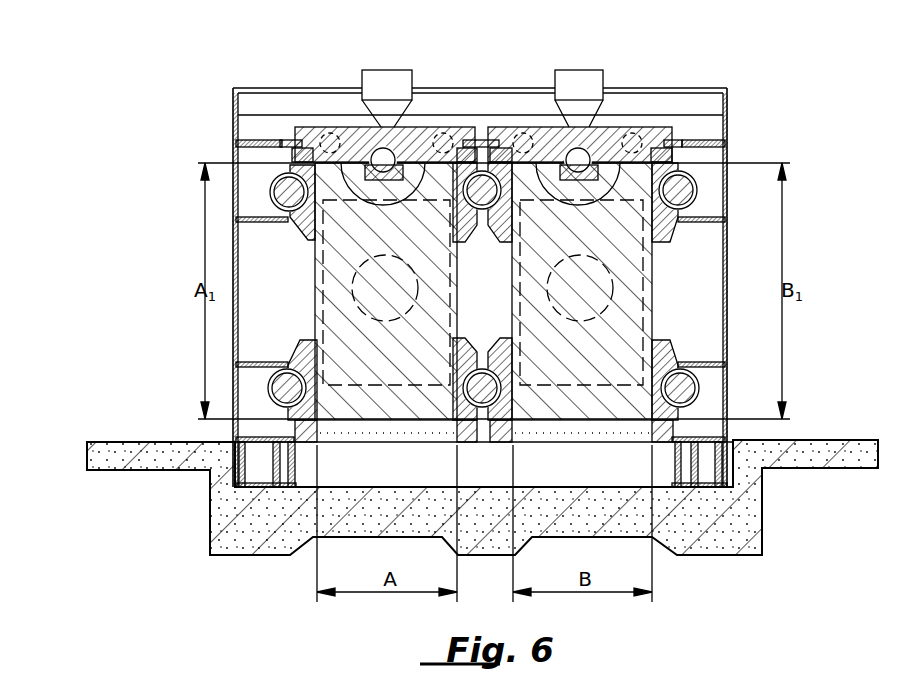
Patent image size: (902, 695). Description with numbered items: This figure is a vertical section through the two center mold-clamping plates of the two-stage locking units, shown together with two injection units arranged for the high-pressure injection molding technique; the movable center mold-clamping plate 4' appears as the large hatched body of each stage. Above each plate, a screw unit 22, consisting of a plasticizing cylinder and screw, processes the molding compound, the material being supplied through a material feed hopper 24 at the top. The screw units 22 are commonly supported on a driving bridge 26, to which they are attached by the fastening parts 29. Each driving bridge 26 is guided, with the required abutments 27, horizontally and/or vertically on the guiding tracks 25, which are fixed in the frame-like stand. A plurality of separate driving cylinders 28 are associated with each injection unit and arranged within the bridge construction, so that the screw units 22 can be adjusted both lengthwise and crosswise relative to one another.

The screw unit 22 is at (396, 148).
The material feed hopper 24 is at (382, 72).
The guiding track 25 is at (289, 140).
The driving bridge 26 is at (385, 132).
The abutment 27 is at (307, 148).
The driving cylinder 28 is at (331, 138).
The fastening part 29 is at (382, 192).
The center mold-clamping plate 4' is at (501, 291).